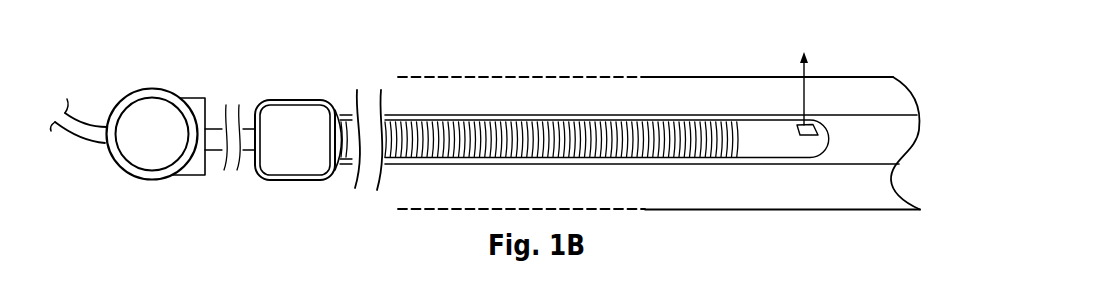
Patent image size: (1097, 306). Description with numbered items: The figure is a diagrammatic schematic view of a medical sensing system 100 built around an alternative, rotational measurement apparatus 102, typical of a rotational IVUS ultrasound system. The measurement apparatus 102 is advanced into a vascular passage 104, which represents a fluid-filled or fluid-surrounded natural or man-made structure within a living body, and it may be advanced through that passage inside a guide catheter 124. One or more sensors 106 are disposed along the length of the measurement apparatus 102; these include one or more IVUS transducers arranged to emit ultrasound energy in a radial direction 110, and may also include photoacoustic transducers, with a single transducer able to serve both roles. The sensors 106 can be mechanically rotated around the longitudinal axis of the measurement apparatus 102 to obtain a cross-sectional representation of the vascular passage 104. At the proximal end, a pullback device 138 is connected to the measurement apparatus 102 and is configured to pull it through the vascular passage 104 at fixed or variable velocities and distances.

The medical sensing system 100 is at (565, 60).
The measurement apparatus 102 is at (840, 52).
The vascular passage 104 is at (740, 210).
The sensors 106 is at (805, 137).
The radial direction 110 is at (802, 70).
The guide catheter 124 is at (770, 115).
The pullback device 138 is at (150, 180).